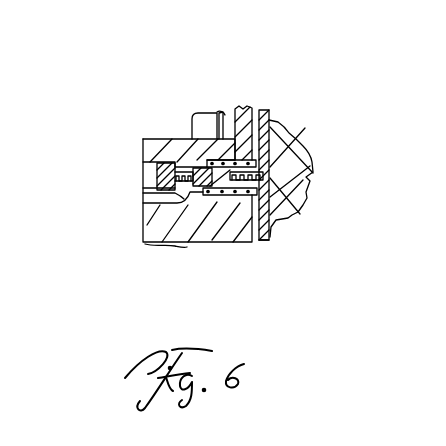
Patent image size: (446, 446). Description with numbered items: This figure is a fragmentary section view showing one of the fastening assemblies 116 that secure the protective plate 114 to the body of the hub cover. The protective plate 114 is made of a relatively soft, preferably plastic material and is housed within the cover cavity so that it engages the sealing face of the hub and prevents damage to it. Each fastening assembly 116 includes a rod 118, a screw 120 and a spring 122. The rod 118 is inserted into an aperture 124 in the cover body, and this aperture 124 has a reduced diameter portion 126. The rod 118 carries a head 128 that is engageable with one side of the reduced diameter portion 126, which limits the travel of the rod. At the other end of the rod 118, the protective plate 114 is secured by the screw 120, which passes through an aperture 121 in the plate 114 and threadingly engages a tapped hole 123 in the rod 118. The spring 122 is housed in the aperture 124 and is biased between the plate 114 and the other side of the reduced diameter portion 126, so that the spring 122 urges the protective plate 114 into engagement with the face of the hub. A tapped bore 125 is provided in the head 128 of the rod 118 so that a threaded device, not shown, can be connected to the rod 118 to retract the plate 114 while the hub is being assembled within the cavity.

The protective plate 114 is at (270, 240).
The fastening assembly 116 is at (142, 236).
The rod 118 is at (195, 195).
The screw 120 is at (272, 166).
The aperture 121 is at (284, 194).
The spring 122 is at (228, 193).
The tapped hole 123 is at (270, 153).
The aperture 124 is at (141, 163).
The tapped bore 125 is at (157, 183).
The reduced diameter portion 126 is at (150, 202).
The head 128 is at (145, 171).